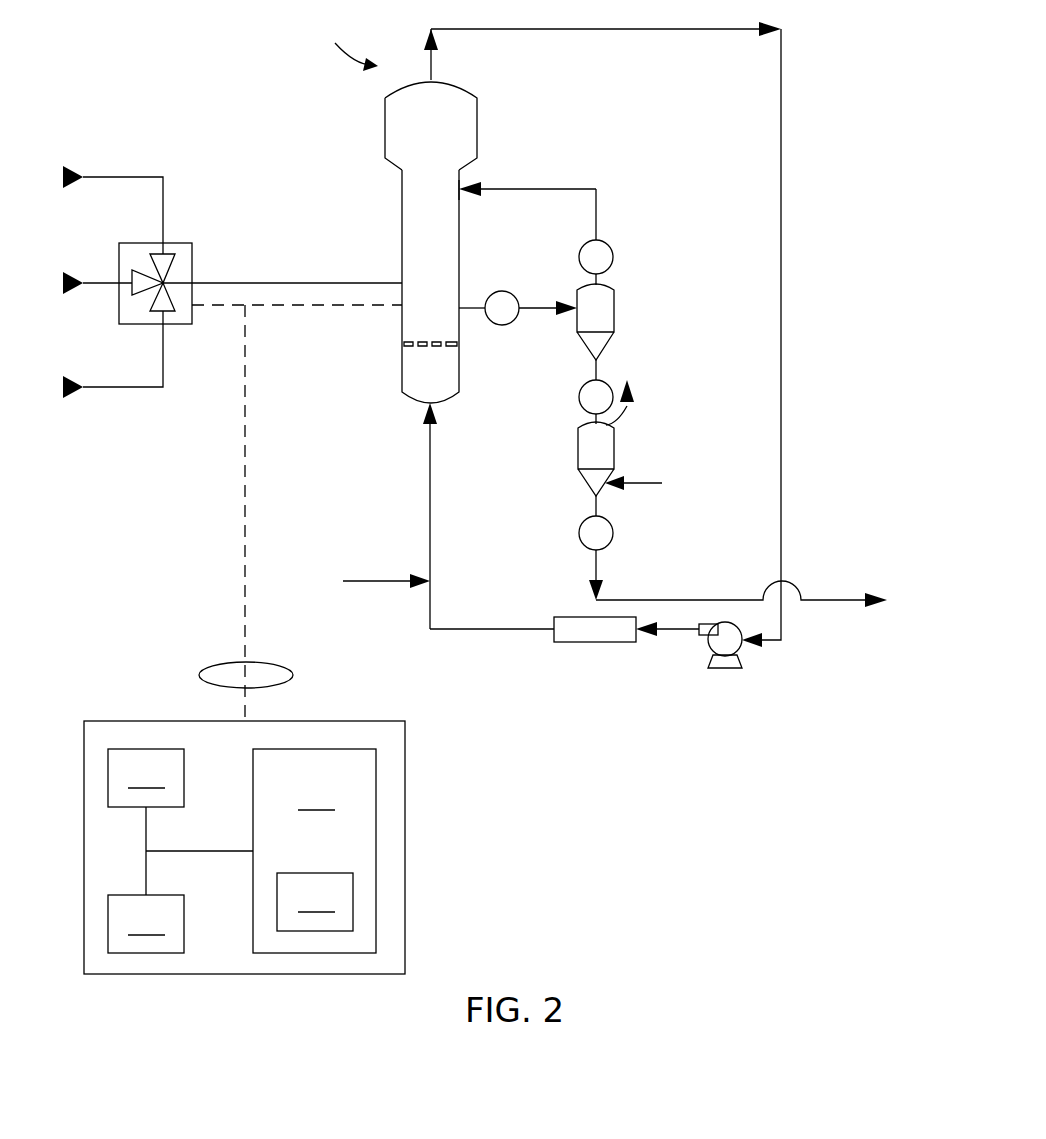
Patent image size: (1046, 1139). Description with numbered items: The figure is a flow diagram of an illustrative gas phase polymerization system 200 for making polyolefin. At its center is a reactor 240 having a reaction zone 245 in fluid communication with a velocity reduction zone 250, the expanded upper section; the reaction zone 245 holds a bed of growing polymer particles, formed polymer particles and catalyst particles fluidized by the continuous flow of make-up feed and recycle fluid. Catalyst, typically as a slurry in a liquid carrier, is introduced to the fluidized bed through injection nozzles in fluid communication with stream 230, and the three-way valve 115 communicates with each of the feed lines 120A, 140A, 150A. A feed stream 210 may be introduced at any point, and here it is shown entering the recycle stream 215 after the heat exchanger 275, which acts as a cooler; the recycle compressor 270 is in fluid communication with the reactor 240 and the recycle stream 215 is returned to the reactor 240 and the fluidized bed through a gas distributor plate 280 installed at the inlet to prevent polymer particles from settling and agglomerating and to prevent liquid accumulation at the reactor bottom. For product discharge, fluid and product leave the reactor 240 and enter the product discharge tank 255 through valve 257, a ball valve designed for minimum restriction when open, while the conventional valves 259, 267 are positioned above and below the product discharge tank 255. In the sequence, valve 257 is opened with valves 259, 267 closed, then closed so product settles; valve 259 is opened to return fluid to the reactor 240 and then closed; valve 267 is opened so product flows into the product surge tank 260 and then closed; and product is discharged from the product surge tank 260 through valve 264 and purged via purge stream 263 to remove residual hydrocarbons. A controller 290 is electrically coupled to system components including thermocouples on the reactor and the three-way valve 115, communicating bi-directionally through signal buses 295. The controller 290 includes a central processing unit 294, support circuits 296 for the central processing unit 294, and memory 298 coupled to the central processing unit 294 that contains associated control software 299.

The polymerization system 200 is at (348, 43).
The three-way valve 115 is at (197, 256).
The feed line 150A is at (112, 172).
The feed line 140A is at (92, 280).
The feed line 120A is at (118, 392).
The stream 230 is at (302, 282).
The reactor 240 is at (421, 203).
The reaction zone 245 is at (460, 222).
The velocity reduction zone 250 is at (478, 117).
The gas distributor plate 280 is at (401, 344).
The feed stream 210 is at (375, 580).
The recycle stream 215 is at (586, 31).
The product discharge tank 255 is at (615, 313).
The valve 257 is at (502, 325).
The valve 259 is at (579, 257).
The product surge tank 260 is at (577, 450).
The purge stream 263 is at (648, 485).
The valve 264 is at (579, 533).
The valve 267 is at (579, 397).
The heat exchanger 275 is at (600, 645).
The recycle compressor 270 is at (728, 670).
The controller 290 is at (244, 819).
The central processing unit 294 is at (146, 778).
The support circuits 296 is at (146, 924).
The memory 298 is at (314, 851).
The control software 299 is at (315, 902).
The signal buses 295 is at (199, 675).